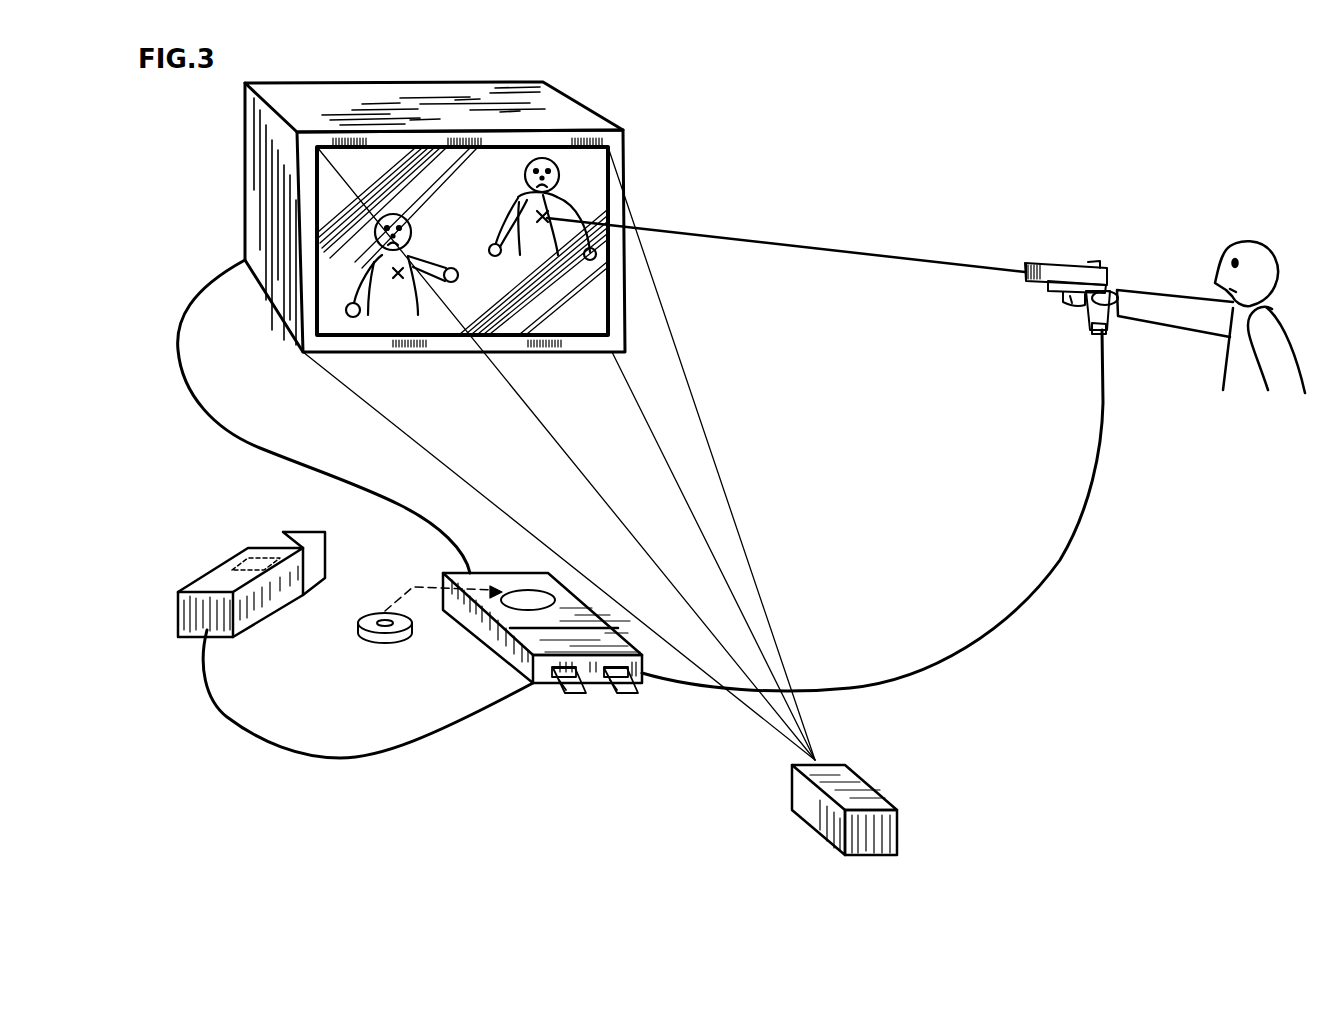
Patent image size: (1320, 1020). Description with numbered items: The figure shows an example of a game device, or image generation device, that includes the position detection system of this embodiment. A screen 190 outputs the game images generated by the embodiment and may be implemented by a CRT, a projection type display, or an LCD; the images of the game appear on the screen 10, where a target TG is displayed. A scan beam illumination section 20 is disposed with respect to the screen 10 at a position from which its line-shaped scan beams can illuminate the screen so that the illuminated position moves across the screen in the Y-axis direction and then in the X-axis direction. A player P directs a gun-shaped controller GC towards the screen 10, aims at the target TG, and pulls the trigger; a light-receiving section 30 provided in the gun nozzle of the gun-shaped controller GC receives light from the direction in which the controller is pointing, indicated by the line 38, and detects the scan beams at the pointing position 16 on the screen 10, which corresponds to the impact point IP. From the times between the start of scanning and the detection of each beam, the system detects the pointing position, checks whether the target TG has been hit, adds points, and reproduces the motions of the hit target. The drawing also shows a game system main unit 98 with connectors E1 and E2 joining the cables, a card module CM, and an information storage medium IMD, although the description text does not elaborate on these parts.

The screen 190 is at (365, 102).
The screen 10 is at (440, 173).
The pointing position 16 is at (558, 197).
The target TG is at (547, 218).
The sight line from gun to target 38 is at (788, 240).
The gun-shaped controller GC is at (1062, 262).
The light-receiving section 30 is at (1020, 284).
The player P is at (1211, 304).
The impact point IP is at (545, 225).
The game system main unit 98 is at (497, 573).
The connector E1 is at (542, 696).
The connector E2 is at (653, 690).
The card module CM is at (215, 570).
The information storage medium IMD is at (243, 543).
The scan beam illumination section 20 is at (867, 780).